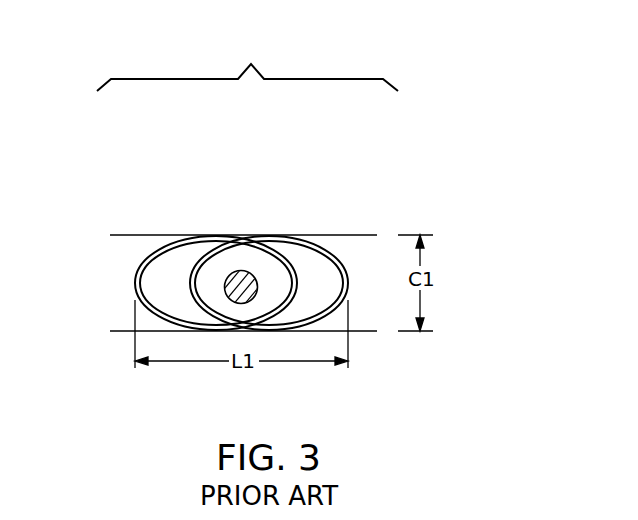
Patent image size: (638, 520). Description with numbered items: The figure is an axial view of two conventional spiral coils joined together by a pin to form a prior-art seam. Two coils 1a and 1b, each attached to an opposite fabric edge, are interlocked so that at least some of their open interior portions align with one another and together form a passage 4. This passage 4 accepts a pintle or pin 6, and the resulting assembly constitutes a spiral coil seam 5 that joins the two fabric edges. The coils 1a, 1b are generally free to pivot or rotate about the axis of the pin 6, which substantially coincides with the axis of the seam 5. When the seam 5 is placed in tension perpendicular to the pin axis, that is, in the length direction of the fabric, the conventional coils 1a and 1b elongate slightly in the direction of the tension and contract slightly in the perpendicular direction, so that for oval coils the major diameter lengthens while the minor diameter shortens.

The spiral coil seam 5 is at (247, 62).
The spiral coil 1a is at (160, 250).
The spiral coil 1b is at (308, 240).
The pintle or pin 6 is at (246, 272).
The passage 4 is at (200, 286).